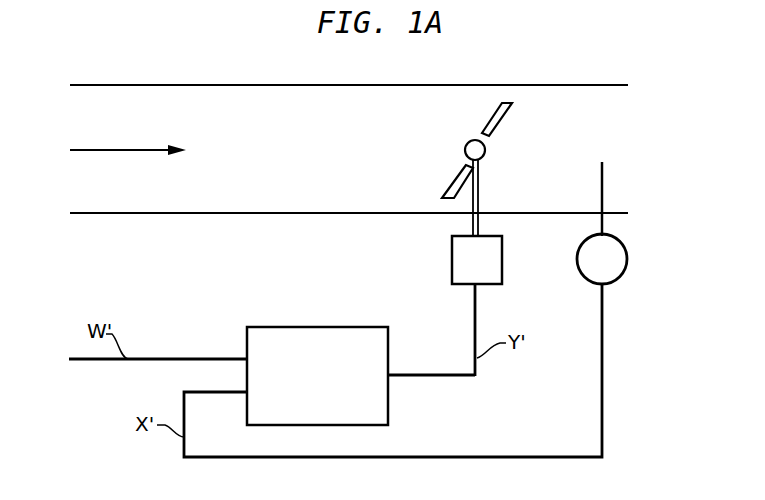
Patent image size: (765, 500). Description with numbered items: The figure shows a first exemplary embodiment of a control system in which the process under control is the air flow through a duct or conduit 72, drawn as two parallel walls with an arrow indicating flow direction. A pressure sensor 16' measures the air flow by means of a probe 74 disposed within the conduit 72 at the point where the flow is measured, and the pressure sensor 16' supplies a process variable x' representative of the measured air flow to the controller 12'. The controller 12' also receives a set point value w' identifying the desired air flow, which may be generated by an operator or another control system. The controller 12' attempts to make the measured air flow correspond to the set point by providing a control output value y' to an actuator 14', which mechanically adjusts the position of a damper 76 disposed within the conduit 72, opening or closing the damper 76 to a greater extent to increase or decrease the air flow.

The conduit 72 is at (537, 85).
The probe 74 is at (602, 197).
The damper 76 is at (503, 110).
The actuator 14' is at (508, 260).
The pressure sensor 16' is at (634, 259).
The controller 12' is at (317, 356).